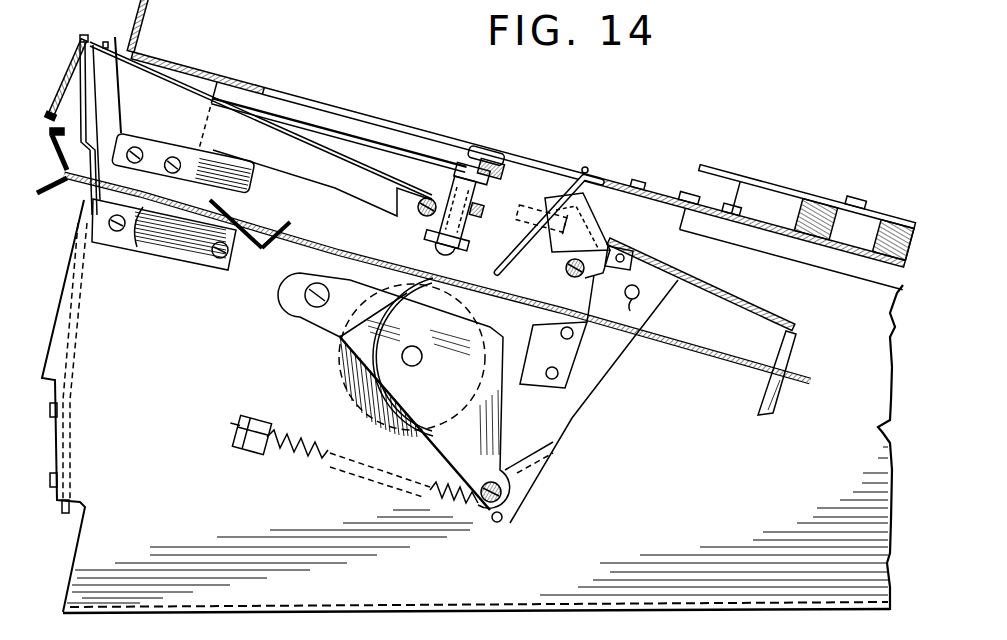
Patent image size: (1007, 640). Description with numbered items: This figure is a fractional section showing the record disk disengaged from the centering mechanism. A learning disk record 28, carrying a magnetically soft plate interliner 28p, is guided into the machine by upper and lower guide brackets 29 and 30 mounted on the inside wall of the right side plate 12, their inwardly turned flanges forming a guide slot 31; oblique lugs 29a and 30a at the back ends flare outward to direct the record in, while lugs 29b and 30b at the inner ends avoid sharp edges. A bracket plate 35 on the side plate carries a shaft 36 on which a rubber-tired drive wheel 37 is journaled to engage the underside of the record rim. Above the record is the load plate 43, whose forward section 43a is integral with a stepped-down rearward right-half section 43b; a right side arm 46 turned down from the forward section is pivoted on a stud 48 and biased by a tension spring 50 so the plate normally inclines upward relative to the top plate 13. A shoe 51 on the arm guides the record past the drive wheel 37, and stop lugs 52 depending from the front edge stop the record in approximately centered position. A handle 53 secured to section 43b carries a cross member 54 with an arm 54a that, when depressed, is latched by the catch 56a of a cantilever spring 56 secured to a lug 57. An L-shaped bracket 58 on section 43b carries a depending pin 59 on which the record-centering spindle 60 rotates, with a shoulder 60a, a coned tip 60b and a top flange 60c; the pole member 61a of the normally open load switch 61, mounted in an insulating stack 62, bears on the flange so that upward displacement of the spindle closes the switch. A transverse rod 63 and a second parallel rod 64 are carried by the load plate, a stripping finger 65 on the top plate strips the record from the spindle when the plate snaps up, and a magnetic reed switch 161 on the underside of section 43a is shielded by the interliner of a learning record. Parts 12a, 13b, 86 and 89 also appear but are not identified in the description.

The right side plate 12 is at (248, 496).
The base edge 12a is at (479, 587).
The top plate 13 is at (737, 208).
The frame member 13b is at (143, 33).
The learning disk record 28 is at (728, 360).
The plate interliner 28p is at (185, 250).
The upper guide bracket 29 is at (225, 162).
The oblique lug 29a is at (68, 140).
The lug 29b is at (288, 215).
The lower guide bracket 30 is at (140, 272).
The oblique lug 30a is at (55, 196).
The lug 30b is at (265, 258).
The guide slot 31 is at (122, 255).
The bracket plate 35 is at (467, 440).
The shaft 36 is at (423, 357).
The drive wheel 37 is at (331, 383).
The load plate 43 is at (781, 306).
The forward section 43a is at (718, 288).
The rearward right-half section 43b is at (408, 150).
The right side arm 46 is at (588, 428).
The stud 48 is at (643, 302).
The tension spring 50 is at (297, 468).
The shoe 51 is at (334, 336).
The stop lugs 52 is at (780, 404).
The handle 53 is at (346, 152).
The cross member 54 is at (60, 86).
The arm 54a is at (84, 33).
The cantilever spring 56 is at (72, 322).
The catch 56a is at (113, 135).
The lug 57 is at (52, 455).
The L-shaped bracket 58 is at (473, 150).
The depending pin 59 is at (486, 158).
The record-centering spindle 60 is at (472, 234).
The shoulder 60a is at (428, 238).
The coned tip 60b is at (455, 258).
The top flange 60c is at (452, 186).
The load switch 61 is at (610, 176).
The pole member 61a is at (520, 185).
The insulating stack 62 is at (600, 226).
The transverse rod 63 is at (580, 278).
The second parallel rod 64 is at (416, 205).
The stripping finger 65 is at (582, 166).
The tab 86 is at (733, 196).
The tab 89 is at (888, 184).
The magnetic reed switch 161 is at (636, 260).